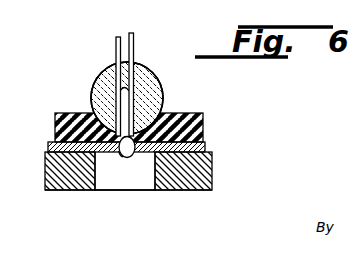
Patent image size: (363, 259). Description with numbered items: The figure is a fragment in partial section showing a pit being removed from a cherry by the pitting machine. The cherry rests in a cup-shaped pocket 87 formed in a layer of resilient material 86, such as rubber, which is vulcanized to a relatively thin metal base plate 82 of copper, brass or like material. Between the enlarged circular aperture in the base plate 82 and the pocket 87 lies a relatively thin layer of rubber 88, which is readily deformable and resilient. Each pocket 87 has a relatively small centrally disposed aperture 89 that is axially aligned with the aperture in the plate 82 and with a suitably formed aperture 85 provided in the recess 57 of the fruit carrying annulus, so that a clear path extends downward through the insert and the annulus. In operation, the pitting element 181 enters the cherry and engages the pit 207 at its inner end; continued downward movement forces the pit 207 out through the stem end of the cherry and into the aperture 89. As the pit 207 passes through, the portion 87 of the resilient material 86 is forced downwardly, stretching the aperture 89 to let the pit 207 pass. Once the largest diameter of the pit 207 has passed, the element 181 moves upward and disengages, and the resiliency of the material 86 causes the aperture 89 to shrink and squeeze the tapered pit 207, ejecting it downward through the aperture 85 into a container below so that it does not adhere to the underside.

The elements 181 is at (134, 36).
The cup-shaped recesses or pockets 87 is at (92, 102).
The layer of resilient material 86 is at (57, 118).
The base plate 82 is at (205, 145).
The thin layer of rubber 88 is at (123, 153).
The aperture 89 is at (133, 156).
The pit 207 is at (128, 160).
The apertures 85 is at (133, 190).
The recess 57 is at (200, 191).